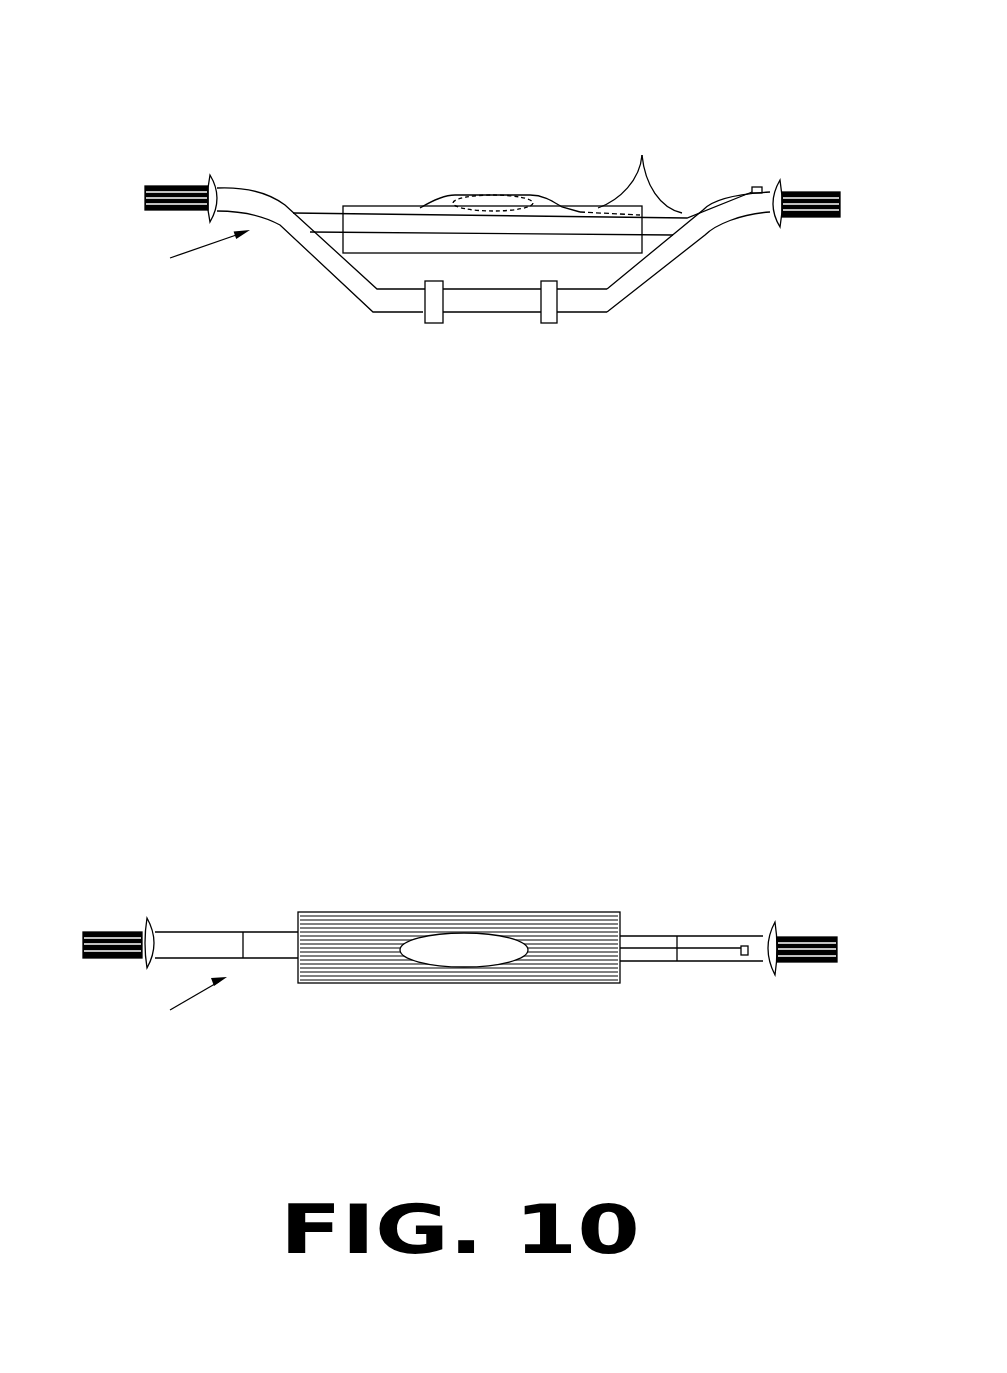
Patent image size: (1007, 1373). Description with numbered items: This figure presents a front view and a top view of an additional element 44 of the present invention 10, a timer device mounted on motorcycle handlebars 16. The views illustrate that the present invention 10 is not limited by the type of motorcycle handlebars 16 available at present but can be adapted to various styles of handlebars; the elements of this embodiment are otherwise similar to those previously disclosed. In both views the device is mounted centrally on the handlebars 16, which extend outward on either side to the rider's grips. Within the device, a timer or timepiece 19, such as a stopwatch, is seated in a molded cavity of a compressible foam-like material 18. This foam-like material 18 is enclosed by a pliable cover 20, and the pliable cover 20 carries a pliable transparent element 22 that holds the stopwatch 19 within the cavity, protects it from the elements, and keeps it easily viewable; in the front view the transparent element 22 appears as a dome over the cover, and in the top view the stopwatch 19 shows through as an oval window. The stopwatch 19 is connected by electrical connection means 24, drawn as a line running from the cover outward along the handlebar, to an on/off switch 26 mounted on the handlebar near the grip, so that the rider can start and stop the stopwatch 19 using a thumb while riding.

The present invention 10 is at (510, 133).
The motorcycle handlebars 16 is at (233, 188).
The compressible foam-like material 18 is at (343, 238).
The timer or timepiece 19 is at (461, 212).
The pliable cover 20 is at (607, 245).
The pliable transparent element 22 is at (447, 205).
The electrical connection means 24 is at (642, 207).
The on/off switch 26 is at (753, 188).
The additional element 44 is at (367, 206).